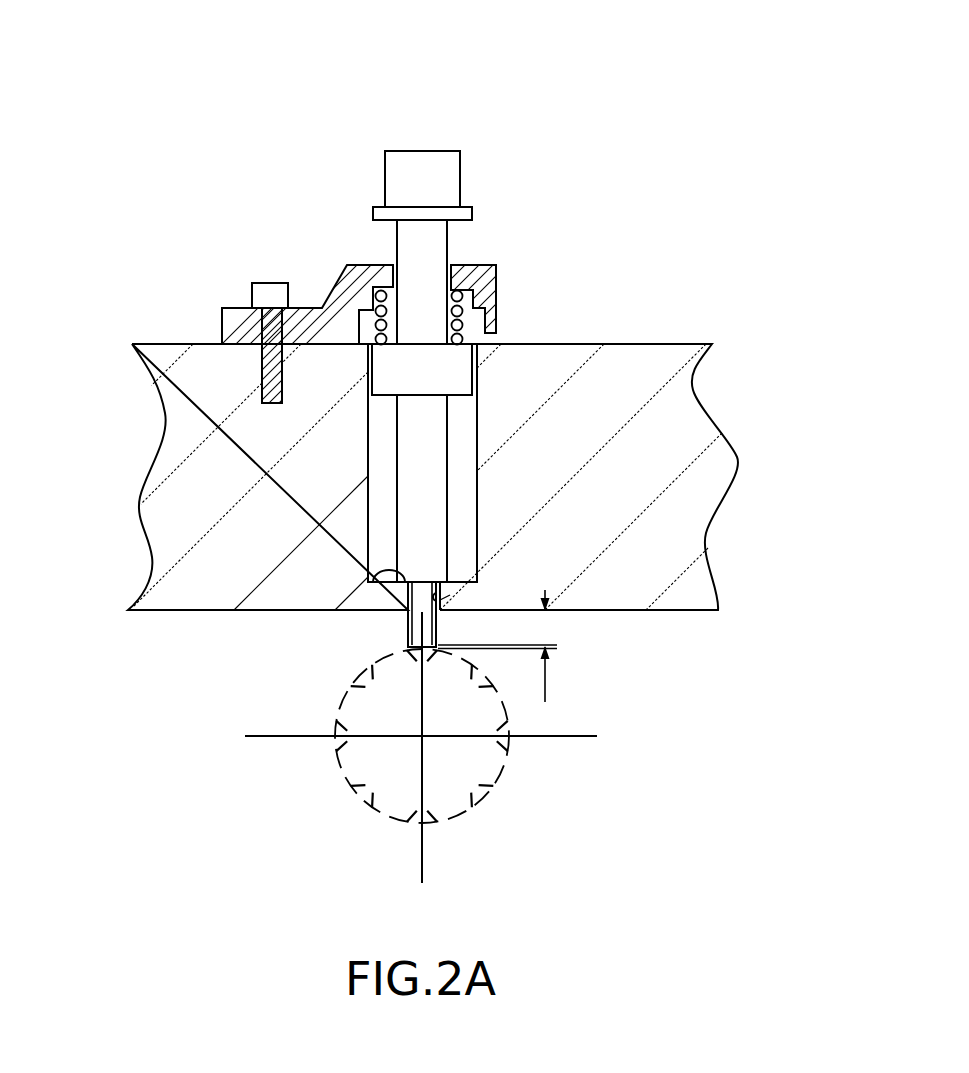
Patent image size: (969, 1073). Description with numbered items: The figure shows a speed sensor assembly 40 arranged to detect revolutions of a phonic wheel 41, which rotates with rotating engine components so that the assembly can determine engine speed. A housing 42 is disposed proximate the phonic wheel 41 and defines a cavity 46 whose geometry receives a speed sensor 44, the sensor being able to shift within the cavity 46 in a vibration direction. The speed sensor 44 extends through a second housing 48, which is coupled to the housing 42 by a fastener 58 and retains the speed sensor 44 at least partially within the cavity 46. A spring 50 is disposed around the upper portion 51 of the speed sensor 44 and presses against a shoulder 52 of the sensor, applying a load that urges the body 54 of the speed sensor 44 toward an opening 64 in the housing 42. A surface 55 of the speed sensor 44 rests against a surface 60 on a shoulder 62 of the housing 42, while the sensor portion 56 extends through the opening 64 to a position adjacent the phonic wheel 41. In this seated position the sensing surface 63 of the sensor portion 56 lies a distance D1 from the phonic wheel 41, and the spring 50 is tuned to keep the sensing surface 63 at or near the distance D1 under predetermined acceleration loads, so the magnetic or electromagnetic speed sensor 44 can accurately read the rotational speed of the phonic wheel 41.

The speed sensor assembly 40 is at (108, 140).
The phonic wheel 41 is at (499, 777).
The housing 42 is at (628, 353).
The speed sensor 44 is at (448, 165).
The cavity 46 is at (467, 413).
The housing 48 is at (490, 277).
The spring 50 is at (378, 307).
The upper portion 51 is at (422, 290).
The shoulder 52 is at (377, 350).
The body 54 is at (417, 523).
The surface 55 is at (382, 583).
The sensor portion 56 is at (407, 615).
The fastener 58 is at (262, 292).
The surface 60 is at (437, 596).
The shoulder 62 is at (443, 598).
The sensing surface 63 is at (442, 633).
The opening 64 is at (444, 608).
The distance D1 is at (532, 646).